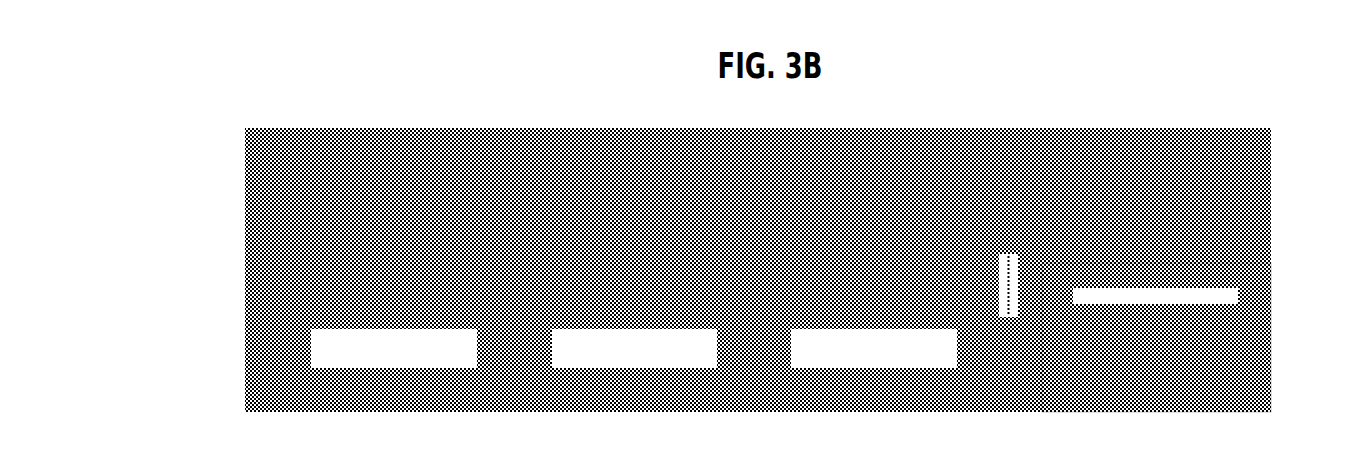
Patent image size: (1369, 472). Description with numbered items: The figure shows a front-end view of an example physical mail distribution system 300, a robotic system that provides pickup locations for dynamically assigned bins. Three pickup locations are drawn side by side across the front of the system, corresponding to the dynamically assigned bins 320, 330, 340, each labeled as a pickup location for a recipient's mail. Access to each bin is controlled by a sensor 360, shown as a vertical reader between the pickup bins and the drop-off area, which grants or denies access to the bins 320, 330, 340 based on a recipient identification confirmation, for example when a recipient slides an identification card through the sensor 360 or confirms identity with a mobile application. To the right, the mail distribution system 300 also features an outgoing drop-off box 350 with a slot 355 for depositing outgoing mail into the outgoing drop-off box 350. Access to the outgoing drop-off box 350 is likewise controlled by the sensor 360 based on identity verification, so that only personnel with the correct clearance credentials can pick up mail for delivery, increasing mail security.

The physical mail distribution system 300 is at (210, 75).
The dynamically assigned bin 320 is at (394, 327).
The dynamically assigned bin 330 is at (634, 327).
The dynamically assigned bin 340 is at (874, 327).
The outgoing drop-off box 350 is at (1273, 357).
The slot 355 is at (1225, 298).
The sensor 360 is at (1023, 268).